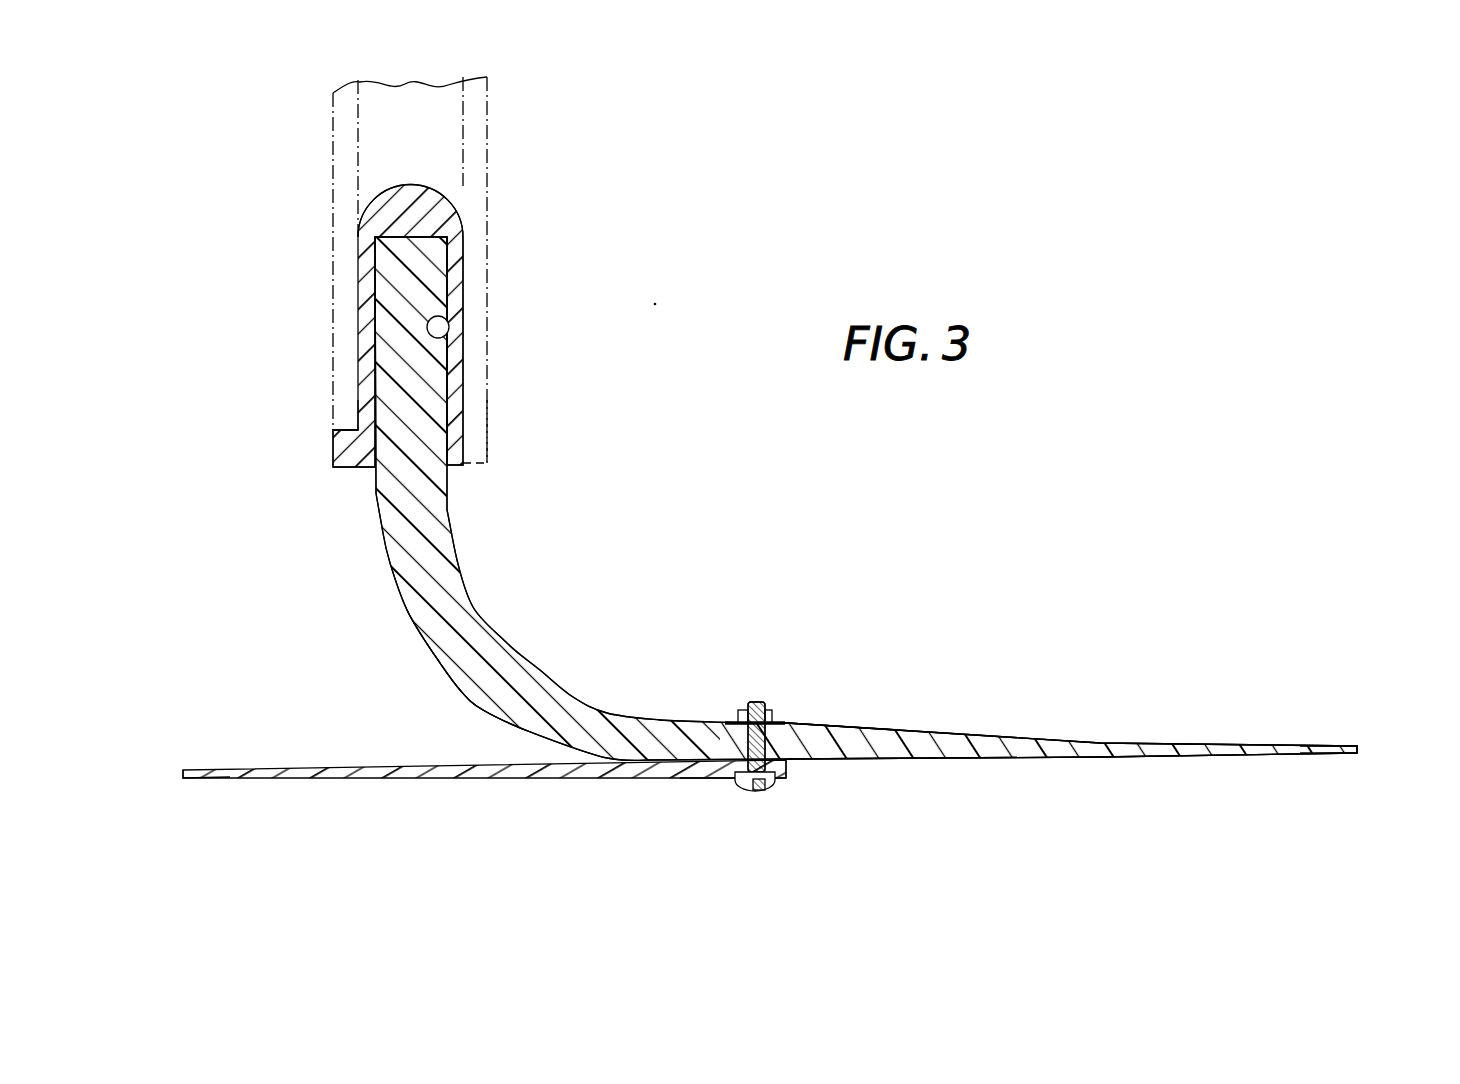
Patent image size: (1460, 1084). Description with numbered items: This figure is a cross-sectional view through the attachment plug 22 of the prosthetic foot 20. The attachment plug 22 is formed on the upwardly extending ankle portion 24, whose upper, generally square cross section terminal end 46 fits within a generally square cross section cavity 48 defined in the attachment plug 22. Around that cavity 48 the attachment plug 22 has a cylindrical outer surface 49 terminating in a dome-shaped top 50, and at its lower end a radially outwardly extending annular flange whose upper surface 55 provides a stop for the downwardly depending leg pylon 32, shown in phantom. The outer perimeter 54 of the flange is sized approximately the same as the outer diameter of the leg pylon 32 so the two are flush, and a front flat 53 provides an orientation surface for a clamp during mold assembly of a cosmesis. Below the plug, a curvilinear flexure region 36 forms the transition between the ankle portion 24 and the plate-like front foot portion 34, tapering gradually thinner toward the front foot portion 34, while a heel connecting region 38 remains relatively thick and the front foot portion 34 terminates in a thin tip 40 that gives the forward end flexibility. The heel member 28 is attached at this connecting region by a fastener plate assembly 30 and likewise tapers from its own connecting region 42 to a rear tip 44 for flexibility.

The prosthetic foot 20 is at (764, 612).
The attachment plug 22 is at (340, 272).
The ankle portion 24 is at (402, 602).
The heel member 28 is at (425, 779).
The fastener plate assembly 30 is at (730, 690).
The leg pylon 32 is at (490, 106).
The front foot portion 34 is at (1165, 745).
The flexure region 36 is at (462, 688).
The heel connecting region 38 is at (807, 723).
The thin tip 40 is at (1357, 746).
The connecting region 42 is at (716, 779).
The rear tip 44 is at (184, 772).
The terminal end 46 is at (462, 265).
The cavity 48 is at (452, 343).
The cylindrical outer surface 49 is at (375, 320).
The dome-shaped top 50 is at (386, 190).
The front flat 53 is at (478, 458).
The outer perimeter 54 is at (335, 447).
The upper surface 55 is at (349, 430).